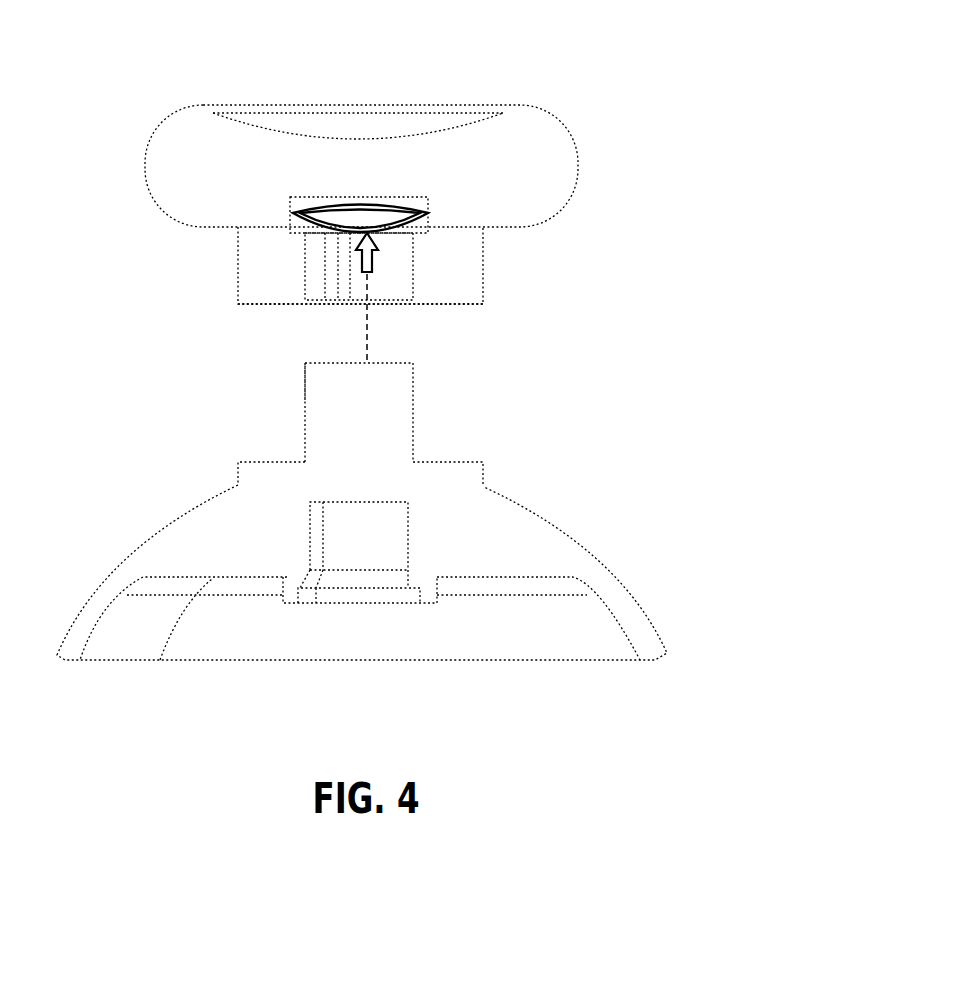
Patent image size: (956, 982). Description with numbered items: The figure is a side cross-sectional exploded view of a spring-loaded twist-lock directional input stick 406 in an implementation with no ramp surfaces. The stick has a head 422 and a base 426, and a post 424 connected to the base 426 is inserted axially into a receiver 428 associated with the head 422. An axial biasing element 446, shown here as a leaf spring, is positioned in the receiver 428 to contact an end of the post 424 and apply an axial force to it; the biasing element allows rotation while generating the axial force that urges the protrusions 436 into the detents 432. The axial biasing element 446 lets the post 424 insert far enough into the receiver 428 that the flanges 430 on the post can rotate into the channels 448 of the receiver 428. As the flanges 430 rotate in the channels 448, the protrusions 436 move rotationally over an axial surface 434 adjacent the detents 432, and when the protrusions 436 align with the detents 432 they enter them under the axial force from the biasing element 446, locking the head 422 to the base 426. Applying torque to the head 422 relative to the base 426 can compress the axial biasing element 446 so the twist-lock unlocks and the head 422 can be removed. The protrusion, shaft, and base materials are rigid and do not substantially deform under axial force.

The directional input stick 406 is at (610, 52).
The head 422 is at (238, 190).
The post 424 is at (413, 373).
The base 426 is at (466, 543).
The receiver 428 is at (306, 306).
The flange 430 is at (300, 383).
The detent 432 is at (453, 462).
The axial surface 434 is at (290, 463).
The protrusion 436 is at (424, 306).
The axial biasing element 446 is at (403, 205).
The channel 448 is at (298, 222).